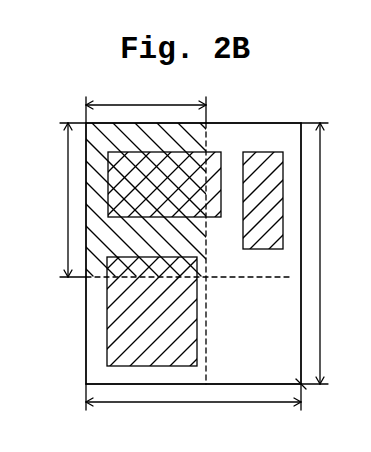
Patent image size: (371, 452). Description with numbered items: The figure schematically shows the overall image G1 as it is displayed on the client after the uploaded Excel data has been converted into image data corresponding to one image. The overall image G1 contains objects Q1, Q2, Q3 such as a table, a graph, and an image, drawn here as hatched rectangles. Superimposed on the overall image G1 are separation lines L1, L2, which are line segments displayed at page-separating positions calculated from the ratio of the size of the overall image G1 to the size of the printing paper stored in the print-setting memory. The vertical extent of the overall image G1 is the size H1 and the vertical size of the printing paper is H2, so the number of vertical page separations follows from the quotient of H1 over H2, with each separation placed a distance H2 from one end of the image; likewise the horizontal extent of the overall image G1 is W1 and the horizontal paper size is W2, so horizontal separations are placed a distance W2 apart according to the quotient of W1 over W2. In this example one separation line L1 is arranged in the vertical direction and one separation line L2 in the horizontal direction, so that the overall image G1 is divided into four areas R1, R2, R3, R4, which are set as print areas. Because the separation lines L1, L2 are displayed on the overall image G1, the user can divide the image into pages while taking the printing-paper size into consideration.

The overall image G1 is at (288, 123).
The area R1 is at (92, 268).
The area R2 is at (236, 135).
The area R3 is at (87, 328).
The area R4 is at (288, 377).
The object Q1 is at (220, 217).
The object Q2 is at (272, 232).
The object Q3 is at (107, 355).
The separation line L1 is at (258, 284).
The separation line L2 is at (208, 343).
The size in a horizontal direction of the overall image W1 is at (193, 404).
The size in a horizontal direction of the printing-paper size W2 is at (146, 99).
The size in a vertical direction of the overall image H1 is at (330, 253).
The size in a vertical direction of the printing-paper size H2 is at (60, 200).